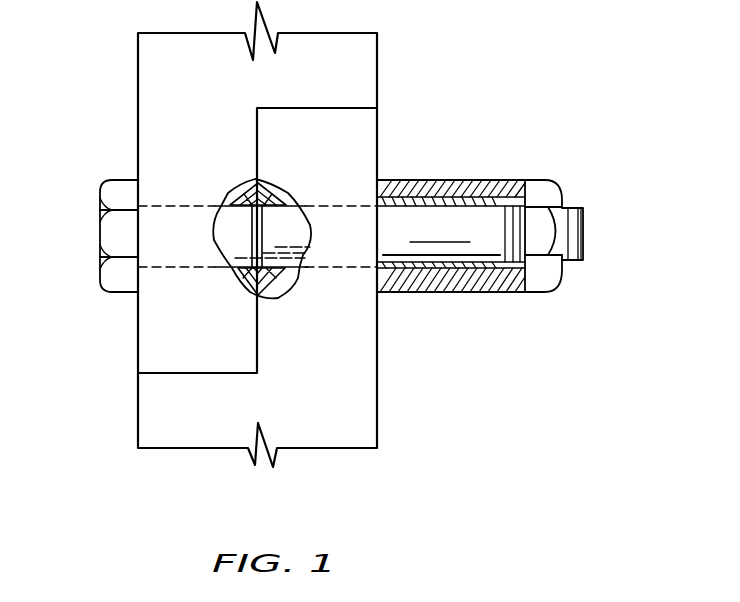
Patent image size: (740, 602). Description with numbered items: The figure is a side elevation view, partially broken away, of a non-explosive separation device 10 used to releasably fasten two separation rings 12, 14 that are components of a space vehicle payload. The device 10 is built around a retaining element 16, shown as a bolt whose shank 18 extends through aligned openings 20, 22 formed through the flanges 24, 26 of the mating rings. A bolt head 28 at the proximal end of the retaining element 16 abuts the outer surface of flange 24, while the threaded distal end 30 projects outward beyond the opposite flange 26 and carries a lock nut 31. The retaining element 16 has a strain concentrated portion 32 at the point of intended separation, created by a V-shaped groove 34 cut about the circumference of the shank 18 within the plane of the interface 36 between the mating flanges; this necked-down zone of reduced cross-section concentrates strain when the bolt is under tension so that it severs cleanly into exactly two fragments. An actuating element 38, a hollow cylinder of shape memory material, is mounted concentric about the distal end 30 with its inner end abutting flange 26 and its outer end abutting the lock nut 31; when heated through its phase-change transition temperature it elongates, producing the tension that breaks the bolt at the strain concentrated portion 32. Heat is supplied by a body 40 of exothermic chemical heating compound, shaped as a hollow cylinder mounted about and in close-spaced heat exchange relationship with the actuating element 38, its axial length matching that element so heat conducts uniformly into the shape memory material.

The non-explosive separation device 10 is at (478, 143).
The separation ring 12 is at (360, 58).
The separation ring 14 is at (378, 412).
The retaining element 16 is at (578, 208).
The shank 18 is at (405, 295).
The opening 20 is at (223, 265).
The opening 22 is at (297, 280).
The flange 24 is at (152, 358).
The flange 26 is at (372, 122).
The bolt head 28 is at (113, 193).
The distal end 30 is at (487, 295).
The lock nut 31 is at (553, 283).
The strain concentrated portion 32 is at (245, 226).
The V-shaped groove 34 is at (283, 185).
The interface 36 is at (258, 180).
The actuating element 38 is at (375, 197).
The body of chemical heating compound 40 is at (442, 295).